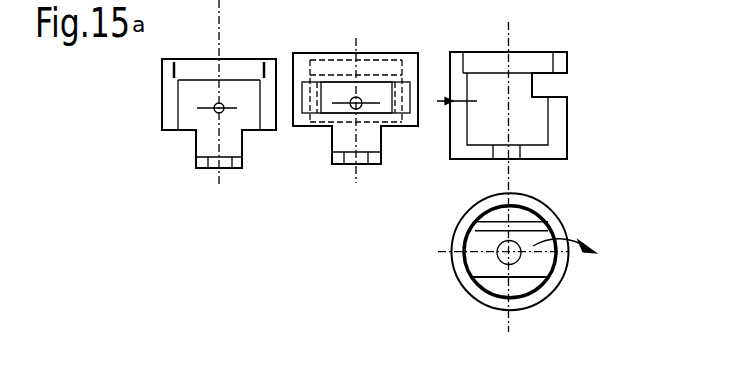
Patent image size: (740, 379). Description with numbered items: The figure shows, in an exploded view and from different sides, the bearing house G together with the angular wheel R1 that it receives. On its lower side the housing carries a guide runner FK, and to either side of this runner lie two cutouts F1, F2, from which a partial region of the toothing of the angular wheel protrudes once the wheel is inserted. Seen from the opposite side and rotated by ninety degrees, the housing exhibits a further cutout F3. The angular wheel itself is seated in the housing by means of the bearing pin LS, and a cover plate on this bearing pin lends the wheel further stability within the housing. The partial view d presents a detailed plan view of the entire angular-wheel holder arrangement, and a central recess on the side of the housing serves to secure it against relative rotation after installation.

The bearing house G is at (173, 107).
The cutout F1 is at (194, 134).
The guide runner FK is at (197, 169).
The cutout F2 is at (243, 135).
The further cutout F3 is at (543, 84).
The angular wheel R1 is at (596, 253).
The bearing pin LS is at (517, 258).
The partial view d is at (427, 337).